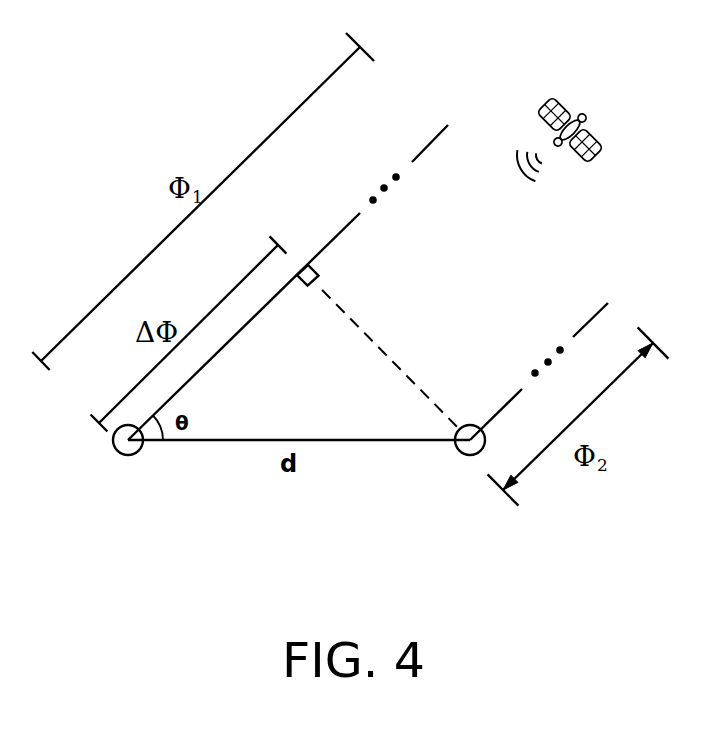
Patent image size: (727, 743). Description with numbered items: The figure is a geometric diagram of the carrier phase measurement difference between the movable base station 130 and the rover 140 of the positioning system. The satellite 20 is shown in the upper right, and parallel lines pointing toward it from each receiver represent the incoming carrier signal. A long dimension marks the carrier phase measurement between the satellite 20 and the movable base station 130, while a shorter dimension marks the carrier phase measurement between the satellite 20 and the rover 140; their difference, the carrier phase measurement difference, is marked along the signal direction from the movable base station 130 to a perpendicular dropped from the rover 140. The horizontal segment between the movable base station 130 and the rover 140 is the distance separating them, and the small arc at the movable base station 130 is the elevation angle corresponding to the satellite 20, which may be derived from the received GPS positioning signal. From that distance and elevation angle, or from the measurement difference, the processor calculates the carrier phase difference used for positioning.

The satellite 20 is at (594, 131).
The movable base station 130 is at (129, 455).
The rover 140 is at (468, 455).